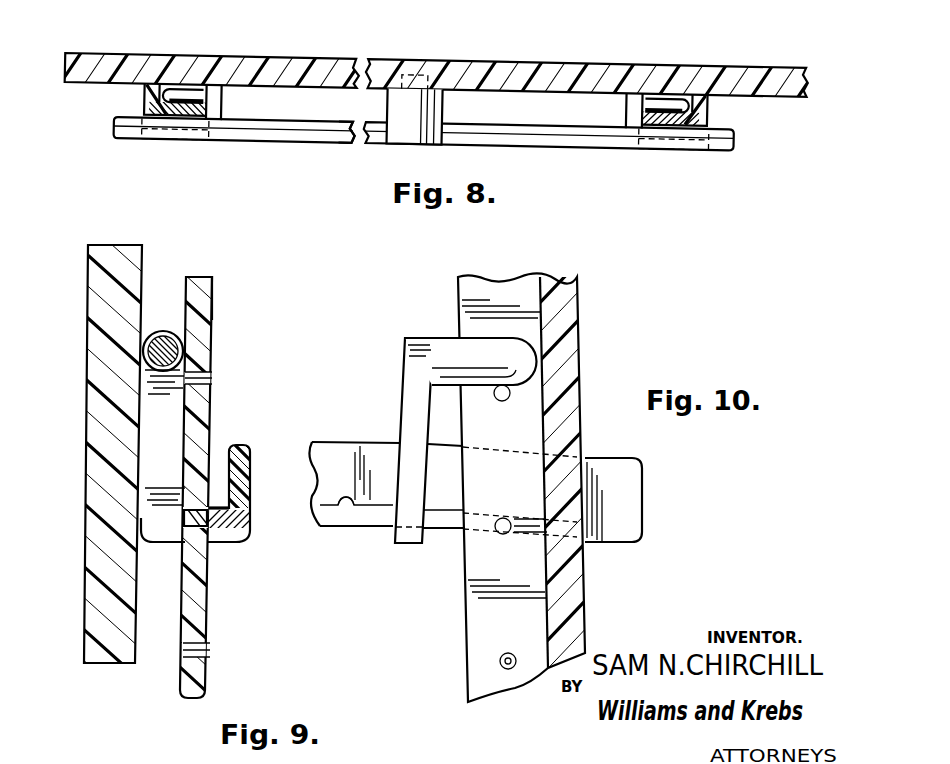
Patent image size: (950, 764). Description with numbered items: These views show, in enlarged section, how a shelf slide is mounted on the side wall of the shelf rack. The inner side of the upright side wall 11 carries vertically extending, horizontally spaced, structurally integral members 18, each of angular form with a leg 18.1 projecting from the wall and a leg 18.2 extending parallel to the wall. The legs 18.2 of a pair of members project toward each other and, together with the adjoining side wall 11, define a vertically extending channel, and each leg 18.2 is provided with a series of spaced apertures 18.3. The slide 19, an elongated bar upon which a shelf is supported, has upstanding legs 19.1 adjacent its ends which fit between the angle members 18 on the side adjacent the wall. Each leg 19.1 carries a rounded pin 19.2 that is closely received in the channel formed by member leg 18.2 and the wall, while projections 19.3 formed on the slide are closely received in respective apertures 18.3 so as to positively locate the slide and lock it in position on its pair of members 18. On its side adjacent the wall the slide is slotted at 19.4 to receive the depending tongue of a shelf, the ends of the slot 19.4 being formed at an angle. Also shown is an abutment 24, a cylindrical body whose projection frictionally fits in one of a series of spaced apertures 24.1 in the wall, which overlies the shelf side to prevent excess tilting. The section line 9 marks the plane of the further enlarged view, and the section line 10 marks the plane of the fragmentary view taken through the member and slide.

In FIG. 8, the section line 9— 9 is at (178, 163).
In FIG. 9, the section line 10— 10 is at (140, 245).
In FIG. 8, the side wall 11 is at (570, 72).
In FIG. 9, the side wall 11 is at (95, 278).
In FIG. 8, the member 18 is at (143, 99).
In FIG. 9, the member 18 is at (214, 323).
In FIG. 10, the member 18 is at (580, 283).
In FIG. 8, the leg 18.1 is at (168, 92).
In FIG. 10, the leg 18.1 is at (562, 316).
In FIG. 8, the leg 18.2 is at (170, 114).
In FIG. 9, the leg 18.2 is at (208, 307).
In FIG. 10, the leg 18.2 is at (494, 287).
In FIG. 8, the aperture 18.3 is at (205, 114).
In FIG. 9, the aperture 18.3 is at (210, 380).
In FIG. 10, the aperture 18.3 is at (508, 397).
In FIG. 8, the slide 19 is at (541, 149).
In FIG. 9, the slide 19 is at (254, 514).
In FIG. 10, the slide 19 is at (645, 491).
In FIG. 8, the upstanding leg 19.1 is at (226, 102).
In FIG. 9, the upstanding leg 19.1 is at (155, 428).
In FIG. 10, the upstanding leg 19.1 is at (412, 382).
In FIG. 8, the rounded pin 19.2 is at (195, 90).
In FIG. 9, the rounded pin 19.2 is at (160, 353).
In FIG. 10, the rounded pin 19.2 is at (438, 345).
In FIG. 9, the projection 19.3 is at (200, 540).
In FIG. 10, the projection 19.3 is at (497, 531).
In FIG. 8, the slot 19.4 is at (333, 125).
In FIG. 9, the slot 19.4 is at (232, 462).
In FIG. 10, the slot 19.4 is at (350, 506).
In FIG. 8, the abutment 24 is at (428, 112).
In FIG. 8, the aperture 24.1 is at (416, 72).